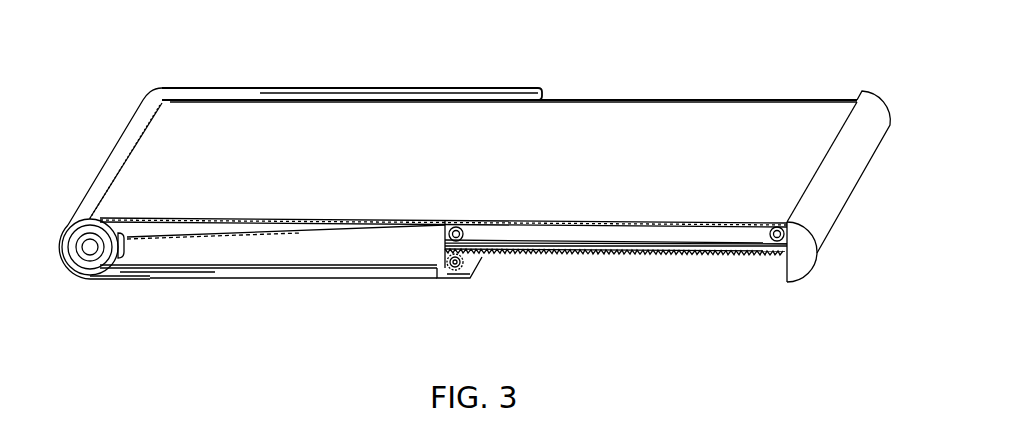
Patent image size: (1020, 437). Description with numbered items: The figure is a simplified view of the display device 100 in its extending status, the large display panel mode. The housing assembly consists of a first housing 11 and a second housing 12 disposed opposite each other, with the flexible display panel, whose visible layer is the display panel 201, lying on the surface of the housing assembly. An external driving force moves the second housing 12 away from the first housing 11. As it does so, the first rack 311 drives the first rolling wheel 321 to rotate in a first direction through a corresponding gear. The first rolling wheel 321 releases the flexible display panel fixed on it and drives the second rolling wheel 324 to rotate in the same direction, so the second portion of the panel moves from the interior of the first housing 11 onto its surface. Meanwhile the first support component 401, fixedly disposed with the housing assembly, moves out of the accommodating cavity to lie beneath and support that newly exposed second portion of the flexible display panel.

The display device 100 is at (148, 30).
The first housing 11 is at (103, 171).
The second housing 12 is at (800, 252).
The display panel 201 is at (325, 122).
The first support component 401 is at (192, 230).
The second rolling wheel 324 is at (90, 250).
The first rolling wheel 321 is at (453, 266).
The first rack 311 is at (598, 256).